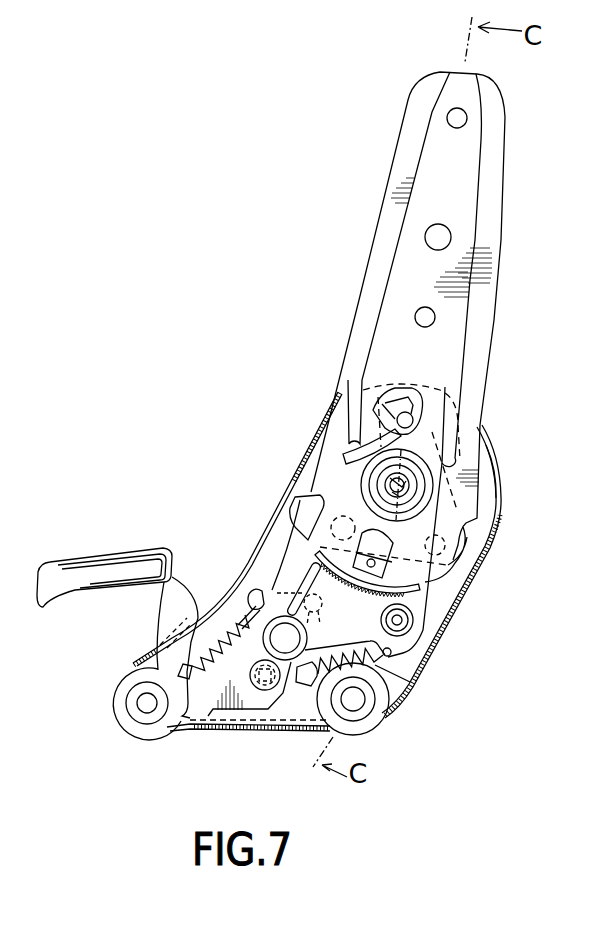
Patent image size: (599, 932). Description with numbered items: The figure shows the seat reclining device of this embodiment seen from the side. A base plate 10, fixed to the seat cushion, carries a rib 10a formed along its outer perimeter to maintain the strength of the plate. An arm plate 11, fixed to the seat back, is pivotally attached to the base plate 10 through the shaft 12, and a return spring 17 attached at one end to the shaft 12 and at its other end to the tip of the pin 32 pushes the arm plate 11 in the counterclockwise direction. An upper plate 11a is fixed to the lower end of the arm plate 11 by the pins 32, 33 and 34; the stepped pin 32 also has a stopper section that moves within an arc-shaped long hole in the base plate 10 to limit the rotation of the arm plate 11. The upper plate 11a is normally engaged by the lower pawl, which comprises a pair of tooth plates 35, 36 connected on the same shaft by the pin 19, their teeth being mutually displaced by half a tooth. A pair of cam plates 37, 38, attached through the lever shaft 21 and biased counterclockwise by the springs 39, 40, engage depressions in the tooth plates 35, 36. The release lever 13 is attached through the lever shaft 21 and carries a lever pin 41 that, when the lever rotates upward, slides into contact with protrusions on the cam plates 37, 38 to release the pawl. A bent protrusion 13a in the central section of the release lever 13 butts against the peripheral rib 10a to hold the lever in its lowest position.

The base plate 10 is at (488, 497).
The rib 10a is at (493, 455).
The arm plate 11 is at (495, 158).
The upper plate 11a is at (448, 582).
The shaft 12 is at (346, 480).
The release lever 13 is at (157, 618).
The protrusion 13a is at (178, 730).
The return spring 17 is at (356, 454).
The pin 19 is at (408, 628).
The lever shaft 21 is at (286, 652).
The pin 32 is at (396, 417).
The pin 33 is at (445, 548).
The pin 34 is at (290, 500).
The tooth plate 35 is at (291, 580).
The tooth plate 36 is at (249, 590).
The cam plate 37 is at (307, 688).
The cam plate 38 is at (238, 597).
The spring 39 is at (395, 660).
The spring 40 is at (213, 610).
The lever pin 41 is at (267, 688).